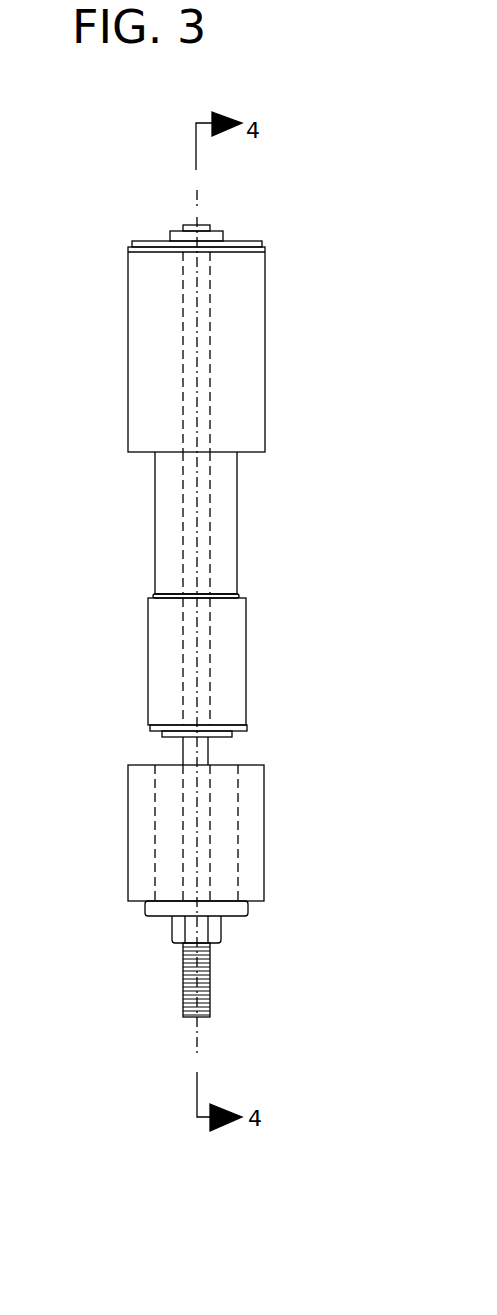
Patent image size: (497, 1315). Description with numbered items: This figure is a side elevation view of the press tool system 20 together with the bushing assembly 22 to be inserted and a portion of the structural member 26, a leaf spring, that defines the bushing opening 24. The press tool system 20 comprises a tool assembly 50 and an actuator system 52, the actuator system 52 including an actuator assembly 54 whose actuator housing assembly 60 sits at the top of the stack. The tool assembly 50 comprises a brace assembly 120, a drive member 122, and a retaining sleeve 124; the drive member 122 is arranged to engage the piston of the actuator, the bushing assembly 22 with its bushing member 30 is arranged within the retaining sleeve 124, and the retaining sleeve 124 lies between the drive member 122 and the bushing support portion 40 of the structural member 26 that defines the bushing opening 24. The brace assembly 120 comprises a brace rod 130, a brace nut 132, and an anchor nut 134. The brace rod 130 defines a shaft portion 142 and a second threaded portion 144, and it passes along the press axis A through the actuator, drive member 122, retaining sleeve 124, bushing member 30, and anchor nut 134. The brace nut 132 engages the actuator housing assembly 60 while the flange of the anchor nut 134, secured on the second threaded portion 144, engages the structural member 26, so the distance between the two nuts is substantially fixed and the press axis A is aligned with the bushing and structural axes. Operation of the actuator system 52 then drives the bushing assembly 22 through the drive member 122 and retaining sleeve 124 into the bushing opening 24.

The press tool system 20 is at (100, 198).
The bushing assembly 22 is at (153, 732).
The bushing opening 24 is at (237, 806).
The structural member 26 is at (200, 833).
The bushing member 30 is at (175, 738).
The bushing support portion 40 is at (255, 840).
The tool assembly 50 is at (185, 468).
The actuator system 52 is at (177, 248).
The actuator assembly 54 is at (196, 349).
The actuator housing assembly 60 is at (248, 337).
The brace assembly 120 is at (217, 987).
The drive member 122 is at (153, 530).
The retaining sleeve 124 is at (226, 663).
The brace rod 130 is at (202, 980).
The brace nut 132 is at (220, 232).
The anchor nut 134 is at (215, 928).
The shaft portion 142 is at (203, 747).
The second threaded portion 144 is at (203, 991).
The press axis A is at (197, 208).